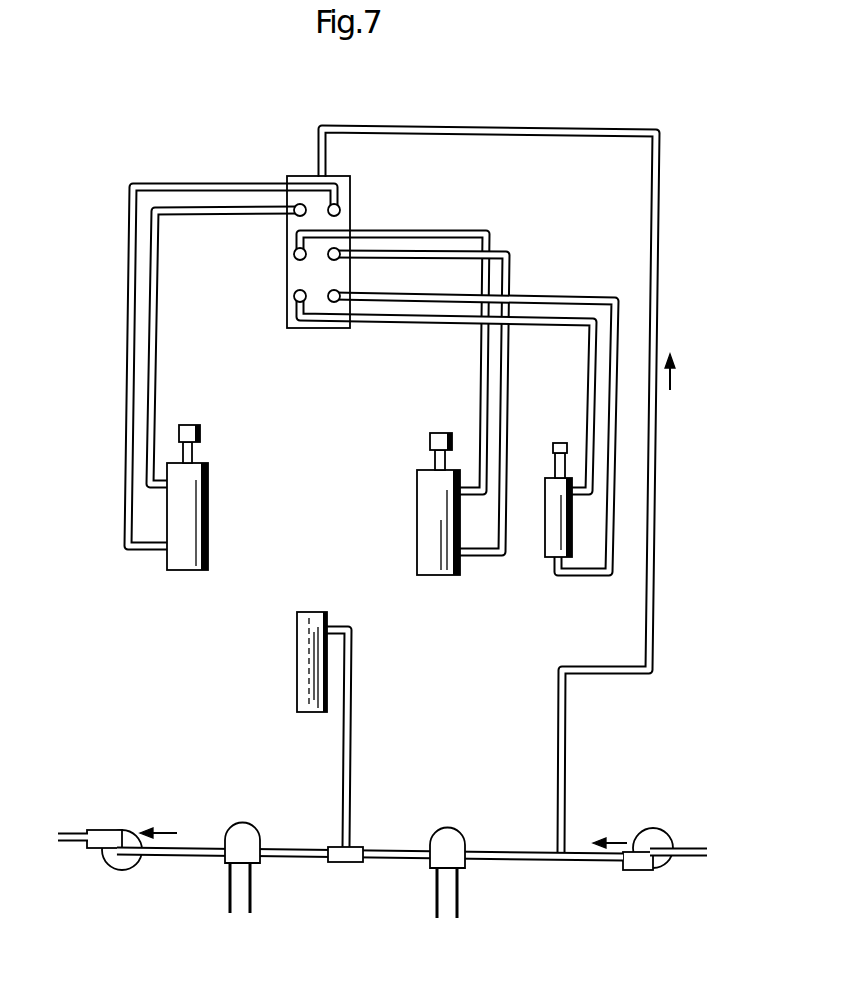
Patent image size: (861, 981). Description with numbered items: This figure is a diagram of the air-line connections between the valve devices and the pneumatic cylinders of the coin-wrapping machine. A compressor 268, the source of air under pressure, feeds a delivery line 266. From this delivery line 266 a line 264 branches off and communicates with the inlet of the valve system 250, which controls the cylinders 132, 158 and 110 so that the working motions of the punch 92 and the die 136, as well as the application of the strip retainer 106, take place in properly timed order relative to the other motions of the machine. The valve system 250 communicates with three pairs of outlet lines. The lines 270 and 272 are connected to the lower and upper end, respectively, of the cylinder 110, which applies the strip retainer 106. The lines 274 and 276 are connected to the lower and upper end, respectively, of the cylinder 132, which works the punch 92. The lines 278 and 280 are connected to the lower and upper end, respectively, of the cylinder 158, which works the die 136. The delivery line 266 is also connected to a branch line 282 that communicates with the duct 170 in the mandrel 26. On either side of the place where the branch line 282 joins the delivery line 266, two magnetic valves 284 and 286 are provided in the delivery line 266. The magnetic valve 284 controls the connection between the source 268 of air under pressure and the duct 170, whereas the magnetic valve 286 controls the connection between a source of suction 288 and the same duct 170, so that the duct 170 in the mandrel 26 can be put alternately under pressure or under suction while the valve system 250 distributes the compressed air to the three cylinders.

The line 264 is at (560, 129).
The valve system 250 is at (352, 206).
The outlet line 276 is at (398, 233).
The outlet line 274 is at (433, 257).
The outlet line 270 is at (524, 301).
The outlet line 272 is at (433, 323).
The outlet line 278 is at (128, 300).
The outlet line 280 is at (153, 300).
The die 136 is at (197, 425).
The cylinder 158 is at (217, 515).
The punch 92 is at (435, 432).
The cylinder 132 is at (418, 490).
The strip retainer 106 is at (560, 443).
The cylinder 110 is at (548, 505).
The mandrel 26 is at (297, 645).
The duct 170 is at (300, 697).
The source of suction 288 is at (100, 828).
The magnetic valve 286 is at (240, 821).
The branch line 282 is at (340, 845).
The magnetic valve 284 is at (435, 826).
The delivery line 266 is at (370, 839).
The compressor 268 is at (640, 833).